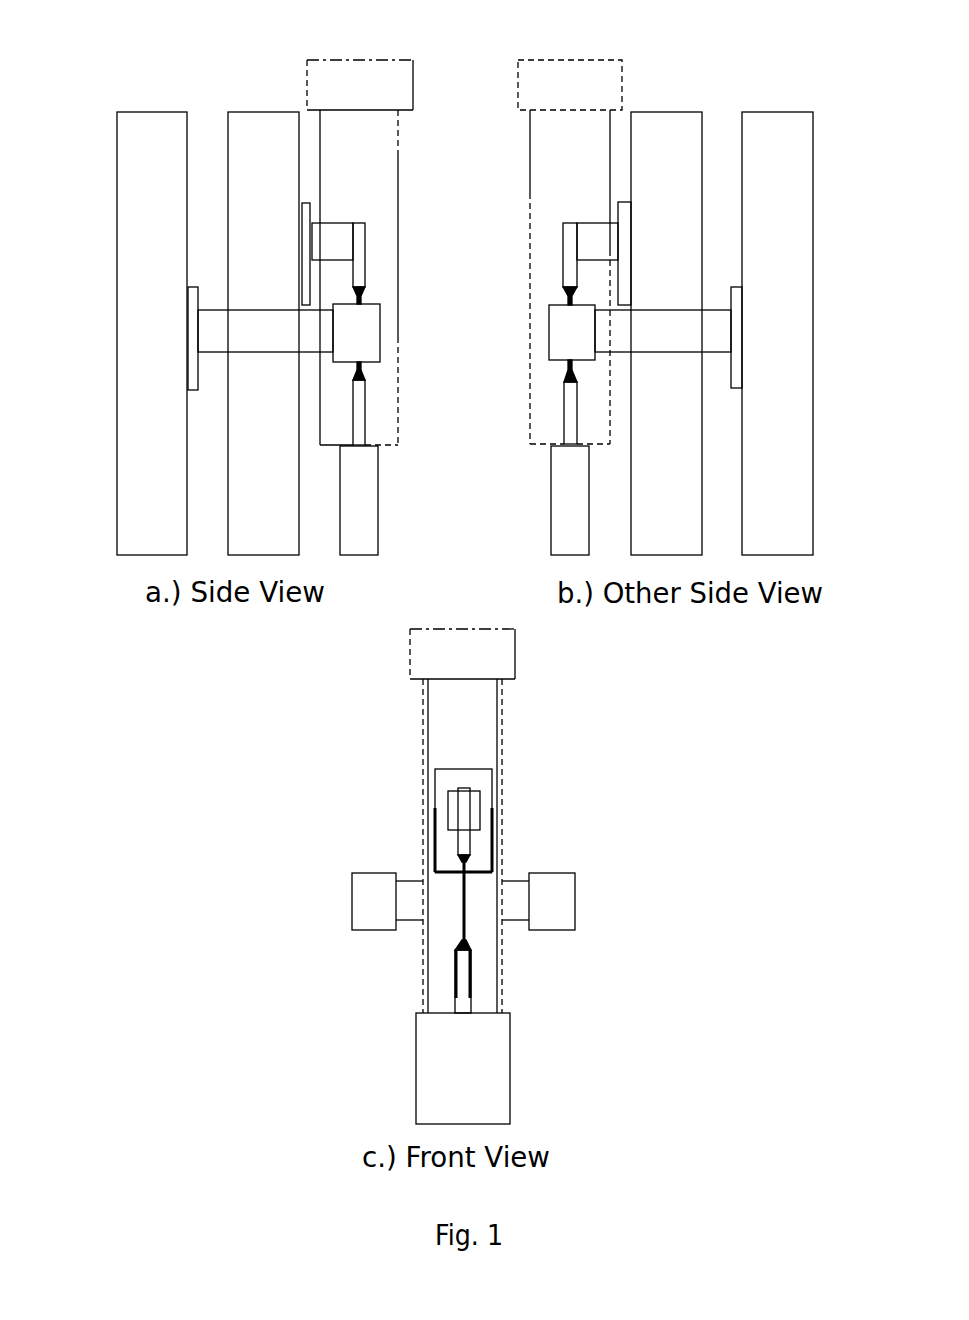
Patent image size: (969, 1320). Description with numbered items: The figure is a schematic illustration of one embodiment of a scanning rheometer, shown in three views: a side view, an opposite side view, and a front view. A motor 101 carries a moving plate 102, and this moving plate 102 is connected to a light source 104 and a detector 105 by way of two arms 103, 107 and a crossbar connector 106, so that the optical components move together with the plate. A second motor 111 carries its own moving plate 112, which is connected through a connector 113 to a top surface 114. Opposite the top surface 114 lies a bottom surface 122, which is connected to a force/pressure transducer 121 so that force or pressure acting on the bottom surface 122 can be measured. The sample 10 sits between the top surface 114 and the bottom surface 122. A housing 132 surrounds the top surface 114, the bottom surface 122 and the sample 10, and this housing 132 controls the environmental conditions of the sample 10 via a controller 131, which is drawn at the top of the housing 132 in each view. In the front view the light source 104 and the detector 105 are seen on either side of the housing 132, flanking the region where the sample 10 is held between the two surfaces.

The sample 10 is at (492, 890).
The motor 101 is at (436, 312).
The moving plate 102 is at (401, 351).
The arm 103 is at (196, 376).
The light source 104 is at (360, 323).
The detector 105 is at (550, 903).
The crossbar connector 106 is at (381, 878).
The arm 107 is at (622, 327).
The second motor 111 is at (442, 312).
The moving plate 112 is at (466, 230).
The connector 113 is at (465, 219).
The top surface 114 is at (358, 242).
The force/pressure transducer 121 is at (464, 785).
The bottom surface 122 is at (360, 402).
The controller 131 is at (357, 80).
The housing 132 is at (367, 143).